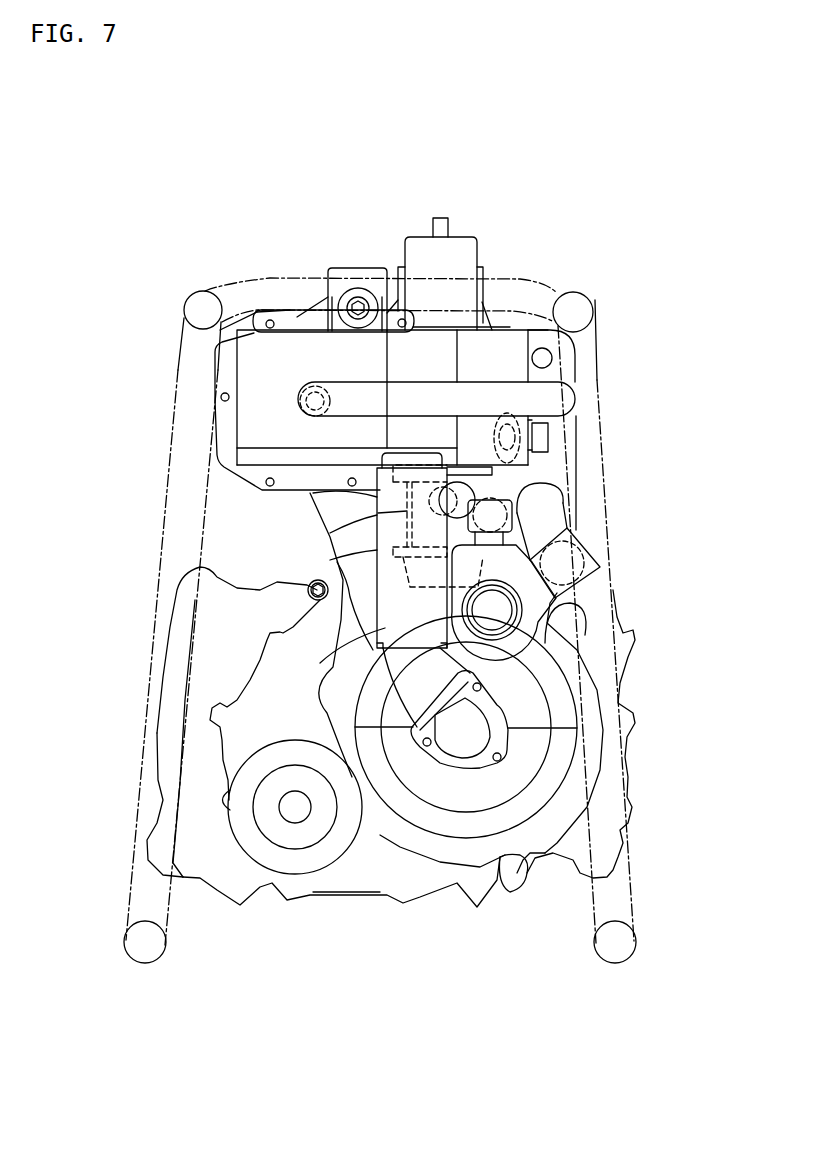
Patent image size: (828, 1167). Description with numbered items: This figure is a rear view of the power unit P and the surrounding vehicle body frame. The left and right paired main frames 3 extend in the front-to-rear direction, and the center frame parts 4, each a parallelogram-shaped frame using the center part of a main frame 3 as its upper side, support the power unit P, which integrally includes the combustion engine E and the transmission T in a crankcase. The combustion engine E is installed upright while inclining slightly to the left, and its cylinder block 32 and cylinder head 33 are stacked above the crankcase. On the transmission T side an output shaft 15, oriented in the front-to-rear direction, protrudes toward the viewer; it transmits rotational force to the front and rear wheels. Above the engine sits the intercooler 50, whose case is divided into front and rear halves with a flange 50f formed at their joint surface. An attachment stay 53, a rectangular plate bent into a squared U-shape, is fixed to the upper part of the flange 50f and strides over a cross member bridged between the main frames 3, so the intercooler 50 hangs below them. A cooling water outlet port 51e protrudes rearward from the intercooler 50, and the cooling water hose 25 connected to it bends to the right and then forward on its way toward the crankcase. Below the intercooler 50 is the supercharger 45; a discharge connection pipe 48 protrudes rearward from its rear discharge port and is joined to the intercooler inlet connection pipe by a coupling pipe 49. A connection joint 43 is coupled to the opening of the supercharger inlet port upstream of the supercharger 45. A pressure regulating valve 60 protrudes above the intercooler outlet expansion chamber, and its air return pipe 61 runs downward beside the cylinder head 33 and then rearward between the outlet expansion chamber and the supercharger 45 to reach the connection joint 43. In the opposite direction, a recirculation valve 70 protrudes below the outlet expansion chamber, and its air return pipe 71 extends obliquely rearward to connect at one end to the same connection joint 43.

The main frame 3 is at (183, 298).
The center frame part 4 is at (127, 947).
The output shaft 15 is at (293, 808).
The cooling water hose 25 is at (575, 396).
The cylinder block 32 is at (330, 560).
The cylinder head 33 is at (313, 494).
The connection joint 43 is at (530, 617).
The supercharger 45 is at (513, 862).
The discharge connection pipe 48 is at (467, 730).
The coupling pipe 49 is at (318, 597).
The intercooler 50 is at (300, 332).
The flange 50f is at (280, 310).
The outlet port 51e is at (300, 401).
The attachment stay 53 is at (350, 268).
The pressure regulating valve 60 is at (463, 235).
The air return pipe 61 is at (547, 517).
The recirculation valve 70 is at (400, 548).
The air return pipe 71 is at (470, 500).
The transmission T is at (136, 750).
The combustion engine E is at (655, 741).
The power unit P is at (405, 925).